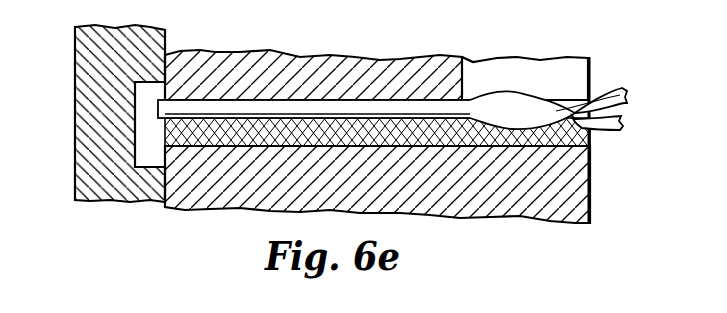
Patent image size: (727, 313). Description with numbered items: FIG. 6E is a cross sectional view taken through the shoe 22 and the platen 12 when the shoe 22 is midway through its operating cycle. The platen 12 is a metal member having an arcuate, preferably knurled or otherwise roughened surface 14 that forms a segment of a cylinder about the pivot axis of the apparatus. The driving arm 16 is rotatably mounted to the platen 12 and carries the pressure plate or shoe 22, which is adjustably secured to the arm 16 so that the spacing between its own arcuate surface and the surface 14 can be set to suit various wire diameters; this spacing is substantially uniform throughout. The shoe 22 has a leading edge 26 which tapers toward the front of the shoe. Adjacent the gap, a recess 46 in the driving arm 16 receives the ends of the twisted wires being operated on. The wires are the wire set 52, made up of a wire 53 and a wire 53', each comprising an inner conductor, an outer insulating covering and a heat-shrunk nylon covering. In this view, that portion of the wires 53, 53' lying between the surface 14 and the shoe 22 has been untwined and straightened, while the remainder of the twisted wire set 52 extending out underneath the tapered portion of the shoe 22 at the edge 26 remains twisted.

The platen 12 is at (227, 197).
The arcuate knurled surface 14 is at (178, 146).
The driving arm 16 is at (75, 66).
The pressure plate or shoe 22 is at (393, 61).
The leading edge 26 is at (512, 72).
The recess 46 is at (149, 105).
The wire set 52 is at (583, 101).
The wire 53 is at (611, 144).
The wire 53' is at (561, 79).